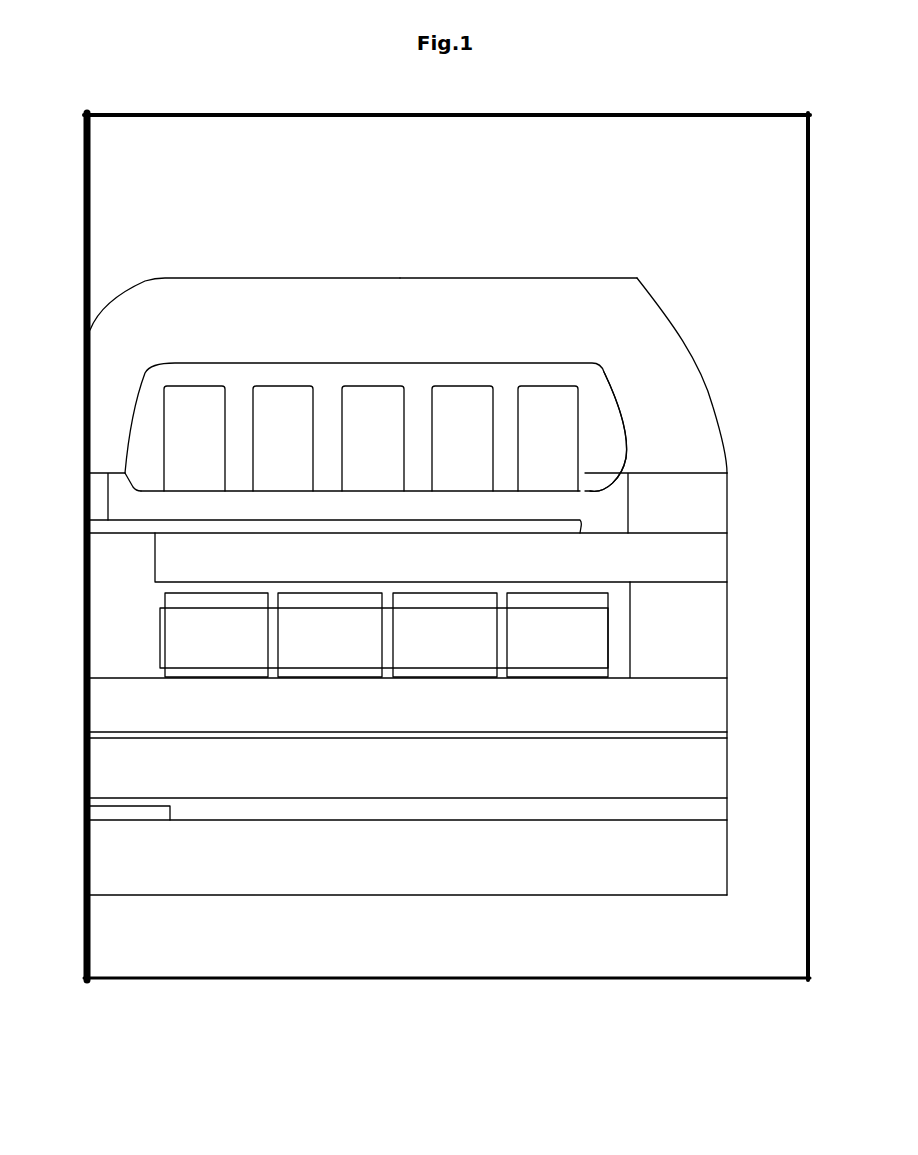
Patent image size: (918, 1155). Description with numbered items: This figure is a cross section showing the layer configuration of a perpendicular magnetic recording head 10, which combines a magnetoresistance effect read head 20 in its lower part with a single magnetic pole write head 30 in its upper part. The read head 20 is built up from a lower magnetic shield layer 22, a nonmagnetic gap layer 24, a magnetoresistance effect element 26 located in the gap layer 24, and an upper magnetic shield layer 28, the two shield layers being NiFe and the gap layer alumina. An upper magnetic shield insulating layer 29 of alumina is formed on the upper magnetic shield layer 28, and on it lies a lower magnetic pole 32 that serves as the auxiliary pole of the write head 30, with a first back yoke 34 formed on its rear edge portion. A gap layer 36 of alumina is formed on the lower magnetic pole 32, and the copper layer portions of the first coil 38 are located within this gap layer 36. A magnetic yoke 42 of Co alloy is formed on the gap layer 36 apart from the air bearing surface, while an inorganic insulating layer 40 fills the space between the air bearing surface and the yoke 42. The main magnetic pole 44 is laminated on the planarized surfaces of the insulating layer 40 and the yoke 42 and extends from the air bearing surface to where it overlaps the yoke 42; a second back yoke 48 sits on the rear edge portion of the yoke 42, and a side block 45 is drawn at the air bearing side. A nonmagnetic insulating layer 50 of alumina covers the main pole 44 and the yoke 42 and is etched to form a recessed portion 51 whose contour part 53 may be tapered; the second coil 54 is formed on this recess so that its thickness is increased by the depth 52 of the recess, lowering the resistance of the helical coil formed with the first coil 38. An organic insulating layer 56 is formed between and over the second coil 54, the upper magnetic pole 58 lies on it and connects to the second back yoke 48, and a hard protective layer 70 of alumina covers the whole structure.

The perpendicular magnetic recording head 10 is at (624, 204).
The read head 20 is at (816, 747).
The lower magnetic shield layer 22 is at (710, 863).
The nonmagnetic gap layer 24 is at (710, 812).
The magnetoresistance effect element 26 is at (88, 811).
The upper magnetic shield layer 28 is at (710, 773).
The upper magnetic shield insulating layer 29 is at (727, 738).
The write head 30 is at (816, 233).
The lower magnetic pole 32 is at (710, 700).
The first back yoke 34 is at (710, 652).
The gap layer 36 is at (160, 654).
The first coil 38 is at (188, 627).
The inorganic insulating layer 40 is at (93, 552).
The magnetic yoke 42 is at (710, 555).
The main magnetic pole 44 is at (580, 522).
The side block 45 is at (93, 493).
The second back yoke 48 is at (710, 503).
The nonmagnetic insulating layer 50 is at (327, 500).
The recessed portion 51 is at (235, 490).
The depth 52 is at (588, 493).
The contour part 53 is at (130, 481).
The second coil 54 is at (563, 412).
The organic insulating layer 56 is at (553, 376).
The upper magnetic pole 58 is at (498, 296).
The hard protective layer 70 is at (278, 228).